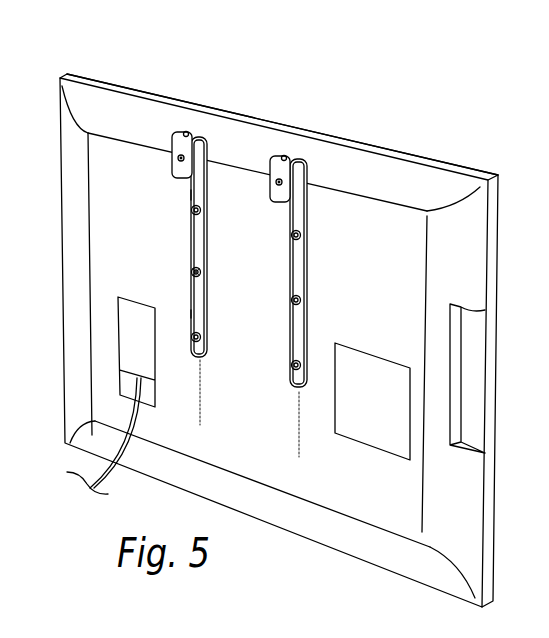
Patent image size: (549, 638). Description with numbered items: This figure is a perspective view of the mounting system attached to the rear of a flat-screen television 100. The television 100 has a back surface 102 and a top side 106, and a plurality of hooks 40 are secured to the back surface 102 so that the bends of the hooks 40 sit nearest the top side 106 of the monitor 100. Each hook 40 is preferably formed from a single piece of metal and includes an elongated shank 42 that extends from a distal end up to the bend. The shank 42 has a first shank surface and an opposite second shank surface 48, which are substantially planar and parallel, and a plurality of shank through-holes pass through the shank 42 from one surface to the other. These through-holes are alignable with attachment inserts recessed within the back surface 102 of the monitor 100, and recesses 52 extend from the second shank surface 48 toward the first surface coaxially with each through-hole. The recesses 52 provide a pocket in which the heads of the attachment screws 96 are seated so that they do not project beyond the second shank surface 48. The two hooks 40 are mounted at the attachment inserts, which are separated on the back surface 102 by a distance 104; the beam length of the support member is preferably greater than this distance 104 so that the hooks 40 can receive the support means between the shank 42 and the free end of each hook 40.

The flat-screen television 100 is at (500, 218).
The back surface 102 is at (385, 233).
The top side 106 is at (105, 85).
The hook 40 is at (186, 132).
The shank 42 is at (186, 190).
The second shank surface 48 is at (199, 313).
The recess 52 is at (199, 268).
The attachment screw 96 is at (191, 276).
The distance between the attachment inserts 104 is at (296, 446).